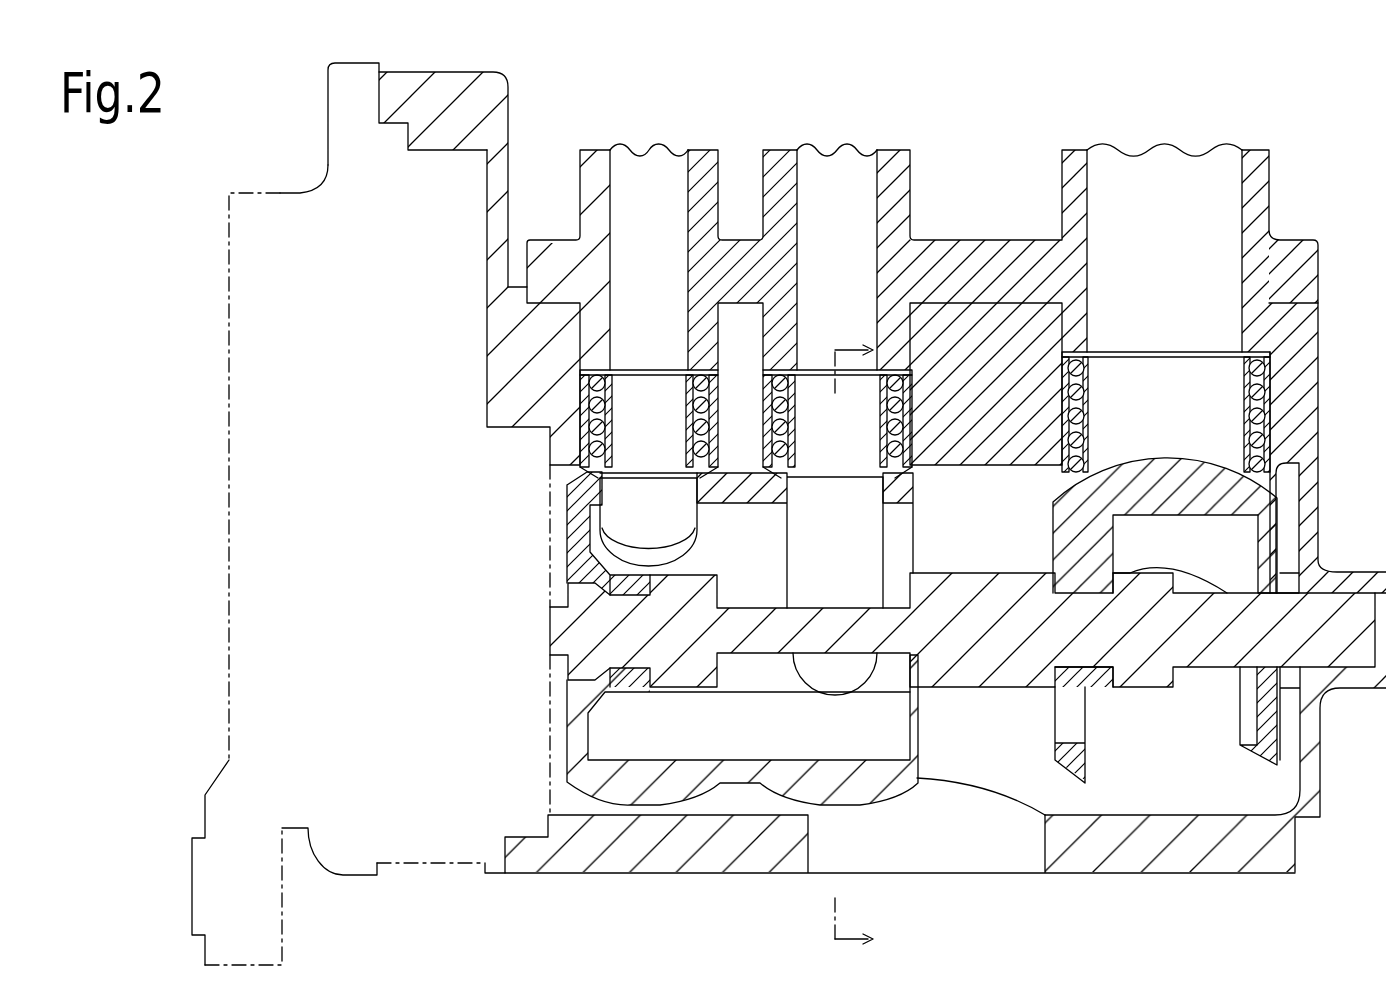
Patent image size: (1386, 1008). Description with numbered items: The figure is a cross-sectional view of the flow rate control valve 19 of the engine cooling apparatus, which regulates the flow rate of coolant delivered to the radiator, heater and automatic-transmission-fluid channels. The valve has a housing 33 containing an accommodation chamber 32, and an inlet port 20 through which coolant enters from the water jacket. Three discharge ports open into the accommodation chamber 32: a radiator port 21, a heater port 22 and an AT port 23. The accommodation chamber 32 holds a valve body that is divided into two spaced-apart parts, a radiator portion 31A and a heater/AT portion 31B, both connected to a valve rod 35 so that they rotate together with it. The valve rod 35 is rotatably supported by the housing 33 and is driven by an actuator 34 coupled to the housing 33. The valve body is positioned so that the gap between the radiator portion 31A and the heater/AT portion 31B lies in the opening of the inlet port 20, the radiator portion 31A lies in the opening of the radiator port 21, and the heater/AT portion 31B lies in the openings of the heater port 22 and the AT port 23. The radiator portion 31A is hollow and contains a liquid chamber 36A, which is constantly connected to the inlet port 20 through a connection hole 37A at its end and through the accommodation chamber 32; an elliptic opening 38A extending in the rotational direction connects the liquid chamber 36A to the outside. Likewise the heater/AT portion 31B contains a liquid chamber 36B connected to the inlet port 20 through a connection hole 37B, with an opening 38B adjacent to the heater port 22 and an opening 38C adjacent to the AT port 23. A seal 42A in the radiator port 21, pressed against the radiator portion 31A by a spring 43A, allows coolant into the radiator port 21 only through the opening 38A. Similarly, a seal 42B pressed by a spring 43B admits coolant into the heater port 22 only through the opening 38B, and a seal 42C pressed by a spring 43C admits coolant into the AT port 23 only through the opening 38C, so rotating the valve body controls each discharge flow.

The flow rate control valve 19 is at (1281, 106).
The inlet port 20 is at (992, 866).
The radiator port 21 is at (1169, 153).
The heater port 22 is at (831, 153).
The AT port 23 is at (644, 153).
The radiator portion 31A is at (1167, 457).
The heater/AT portion 31B is at (883, 805).
The accommodation chamber 32 is at (882, 515).
The housing 33 is at (1320, 268).
The actuator 34 is at (428, 866).
The valve rod 35 is at (973, 688).
The liquid chamber 36A is at (1170, 557).
The liquid chamber 36B is at (749, 706).
The connection hole 37A is at (1057, 720).
The connection hole 37B is at (917, 543).
The opening 38A is at (1240, 723).
The opening 38B is at (790, 545).
The opening 38C is at (697, 486).
The seal 42A is at (1057, 478).
The seal 42B is at (798, 423).
The seal 42C is at (612, 416).
The spring 43A is at (1085, 372).
The spring 43B is at (782, 369).
The spring 43C is at (598, 369).